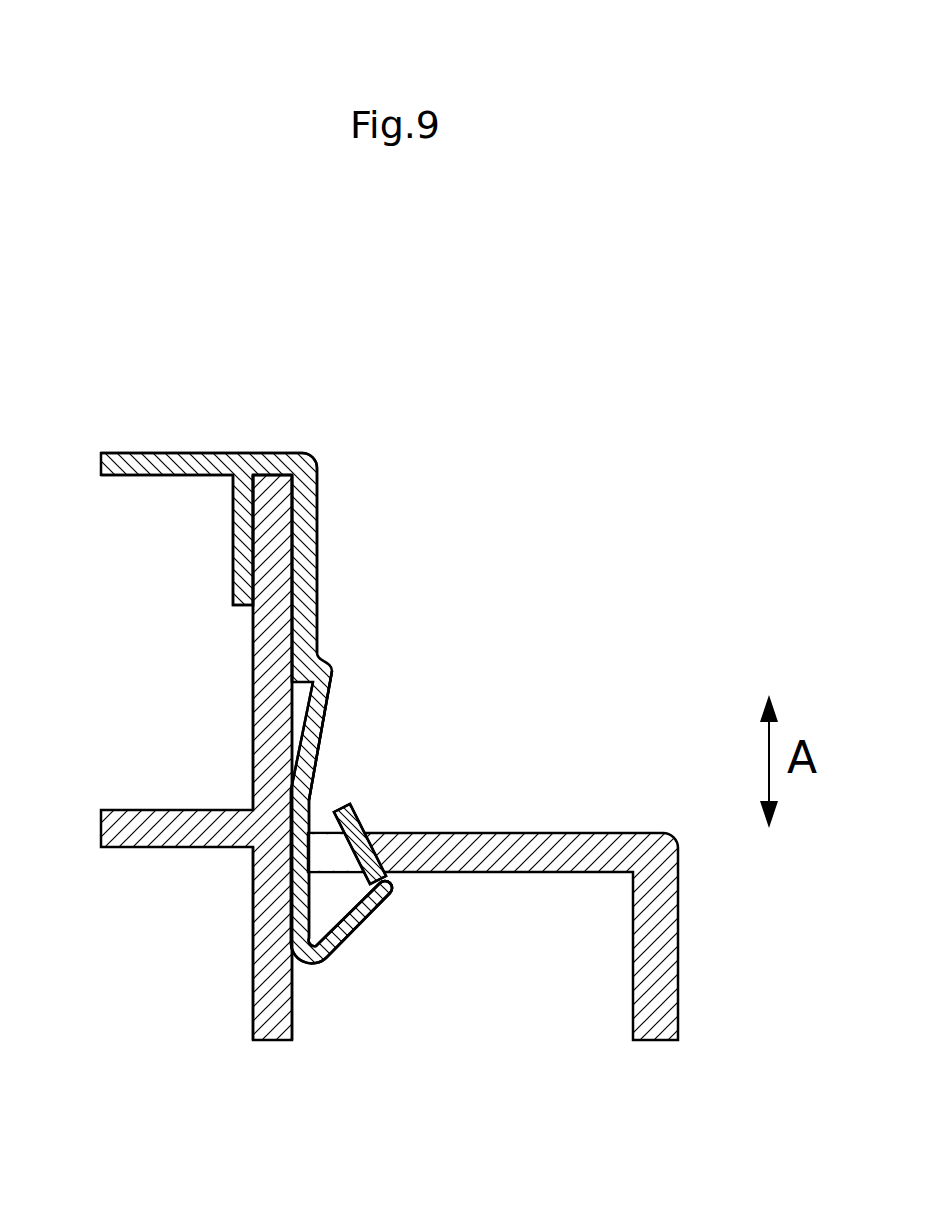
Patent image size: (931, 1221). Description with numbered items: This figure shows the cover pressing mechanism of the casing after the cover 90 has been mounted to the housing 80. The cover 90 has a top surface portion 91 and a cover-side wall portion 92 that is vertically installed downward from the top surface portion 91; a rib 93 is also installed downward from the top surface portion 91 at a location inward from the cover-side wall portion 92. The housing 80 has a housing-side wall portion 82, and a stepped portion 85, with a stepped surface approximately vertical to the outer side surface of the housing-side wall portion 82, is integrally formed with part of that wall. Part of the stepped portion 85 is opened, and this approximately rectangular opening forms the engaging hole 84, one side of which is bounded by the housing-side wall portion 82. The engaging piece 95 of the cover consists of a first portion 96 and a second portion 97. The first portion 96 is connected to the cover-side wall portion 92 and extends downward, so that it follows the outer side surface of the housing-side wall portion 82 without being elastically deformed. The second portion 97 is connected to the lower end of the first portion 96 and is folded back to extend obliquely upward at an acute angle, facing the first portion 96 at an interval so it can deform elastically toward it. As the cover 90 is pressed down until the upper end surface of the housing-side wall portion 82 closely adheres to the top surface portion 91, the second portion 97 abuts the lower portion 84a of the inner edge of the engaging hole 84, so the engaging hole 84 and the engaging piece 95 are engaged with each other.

The housing 80 is at (244, 650).
The housing-side wall portion 82 is at (250, 742).
The engaging hole 84 is at (326, 858).
The lower portion of inner edge of engaging hole 84a is at (381, 898).
The stepped portion 85 is at (568, 835).
The cover 90 is at (322, 495).
The top surface portion 91 is at (170, 452).
The cover-side wall portion 92 is at (312, 562).
The rib 93 is at (237, 547).
The engaging piece 95 is at (458, 648).
The first portion 96 is at (327, 734).
The second portion 97 is at (352, 806).